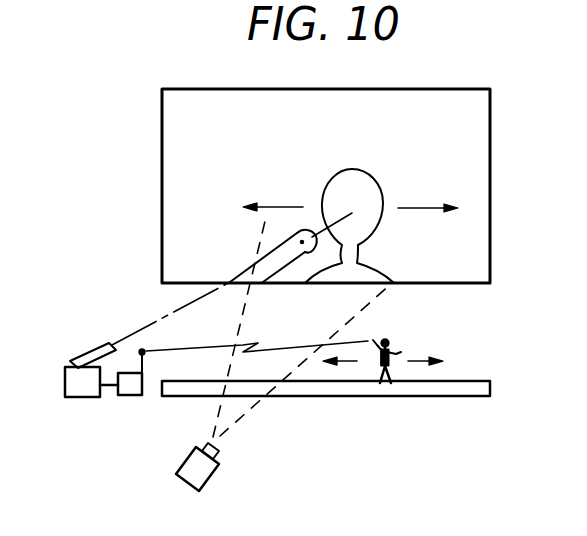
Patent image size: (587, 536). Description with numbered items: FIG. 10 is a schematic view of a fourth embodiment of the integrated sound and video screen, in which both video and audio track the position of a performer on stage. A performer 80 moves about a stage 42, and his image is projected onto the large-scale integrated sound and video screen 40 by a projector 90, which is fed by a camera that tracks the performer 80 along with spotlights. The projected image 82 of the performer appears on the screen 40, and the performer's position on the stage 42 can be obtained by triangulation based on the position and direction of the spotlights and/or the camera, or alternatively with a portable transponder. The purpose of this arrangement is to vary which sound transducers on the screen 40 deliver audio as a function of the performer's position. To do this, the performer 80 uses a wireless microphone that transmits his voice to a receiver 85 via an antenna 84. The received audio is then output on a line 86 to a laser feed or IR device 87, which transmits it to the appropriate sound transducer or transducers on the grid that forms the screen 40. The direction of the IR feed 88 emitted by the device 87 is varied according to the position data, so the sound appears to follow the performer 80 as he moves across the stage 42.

The integrated sound and video screen 40 is at (490, 132).
The displayed image of performer 82 is at (363, 170).
The IR feed 88 is at (130, 331).
The laser feed or IR device 87 is at (75, 398).
The line 86 is at (110, 387).
The receiver 85 is at (130, 396).
The antenna 84 is at (143, 356).
The stage 42 is at (472, 380).
The performer 80 is at (392, 343).
The projector 90 is at (216, 472).